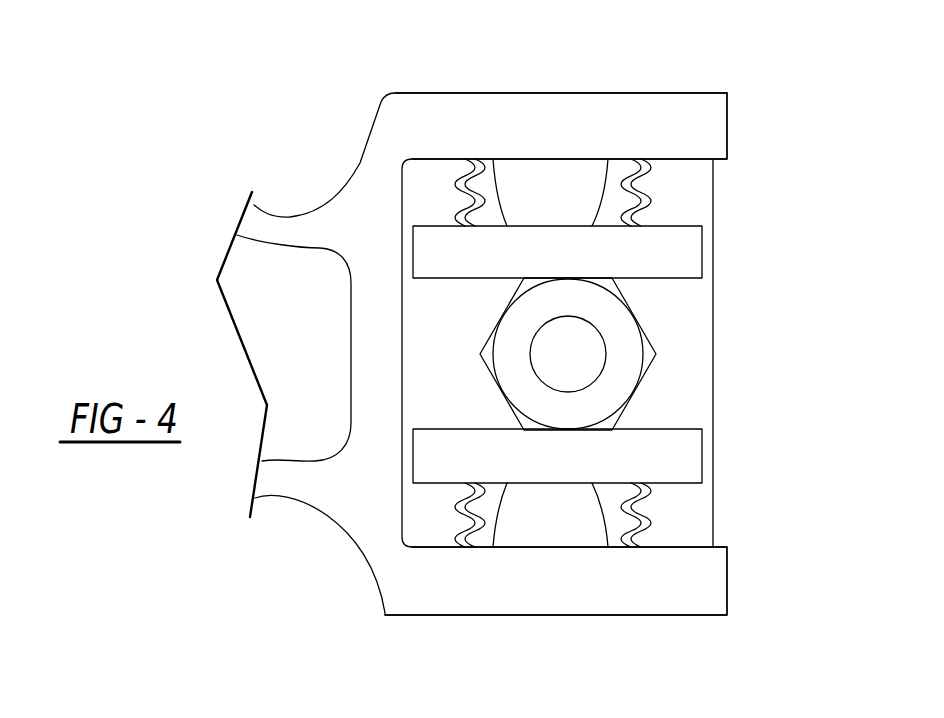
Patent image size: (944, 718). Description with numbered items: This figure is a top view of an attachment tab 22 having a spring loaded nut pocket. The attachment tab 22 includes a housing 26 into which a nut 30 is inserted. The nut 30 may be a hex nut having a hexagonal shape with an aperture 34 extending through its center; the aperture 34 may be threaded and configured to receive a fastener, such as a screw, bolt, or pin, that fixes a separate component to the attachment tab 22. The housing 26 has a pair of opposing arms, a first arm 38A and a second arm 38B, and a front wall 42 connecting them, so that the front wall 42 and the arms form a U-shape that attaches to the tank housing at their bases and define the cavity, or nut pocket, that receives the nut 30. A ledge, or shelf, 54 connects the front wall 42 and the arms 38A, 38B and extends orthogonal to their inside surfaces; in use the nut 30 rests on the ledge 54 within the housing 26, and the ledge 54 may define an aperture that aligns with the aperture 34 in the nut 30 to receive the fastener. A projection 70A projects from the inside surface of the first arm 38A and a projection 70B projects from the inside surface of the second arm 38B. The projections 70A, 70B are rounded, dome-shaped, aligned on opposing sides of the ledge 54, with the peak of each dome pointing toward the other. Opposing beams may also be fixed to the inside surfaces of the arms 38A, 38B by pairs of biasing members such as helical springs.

The attachment tab 22 is at (773, 95).
The housing 26 is at (357, 162).
The front wall 42 is at (370, 465).
The first arm 38A is at (557, 617).
The second arm 38B is at (583, 93).
The ledge 54 is at (714, 253).
The projection 70A is at (513, 532).
The projection 70B is at (523, 183).
The nut 30 is at (640, 388).
The aperture 34 is at (600, 335).